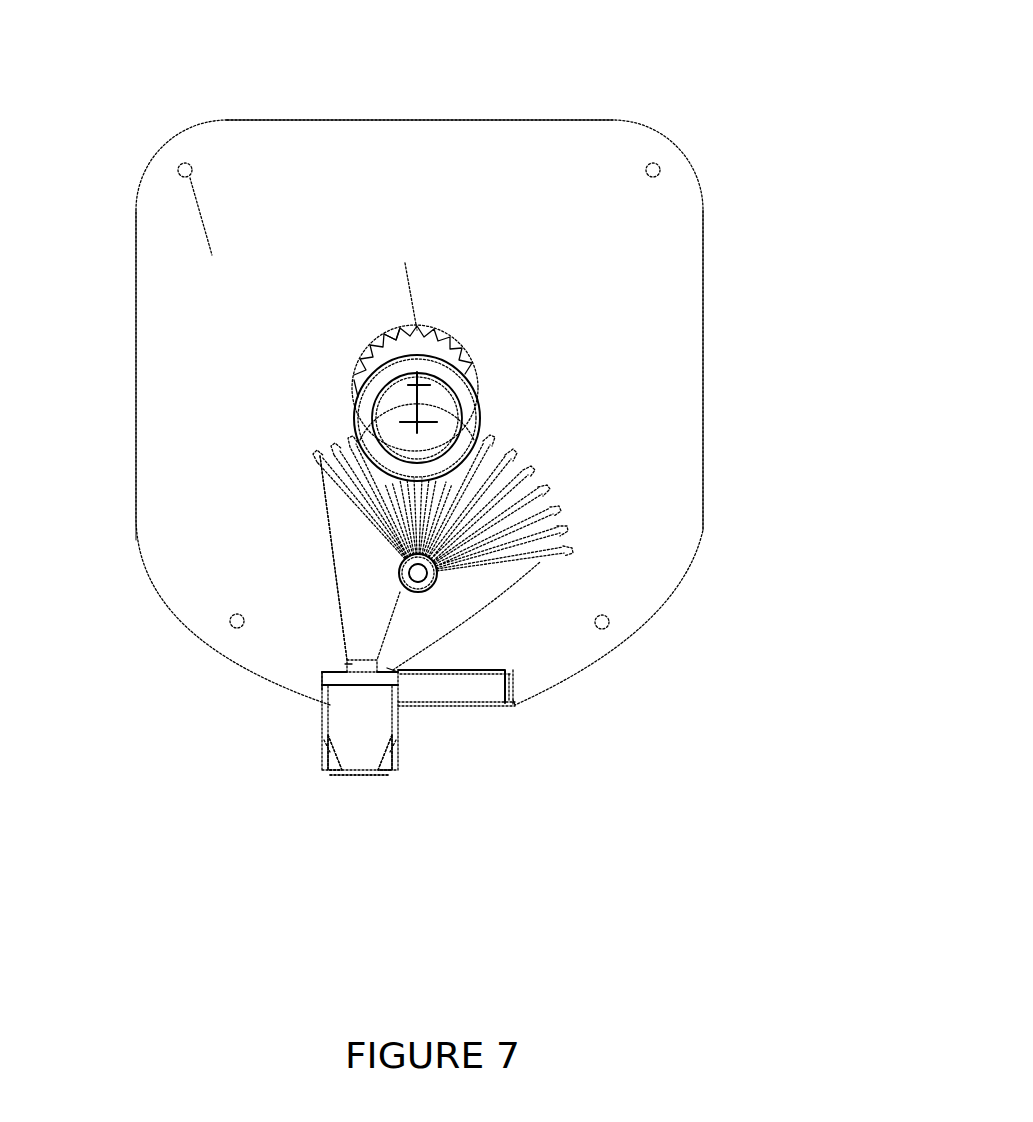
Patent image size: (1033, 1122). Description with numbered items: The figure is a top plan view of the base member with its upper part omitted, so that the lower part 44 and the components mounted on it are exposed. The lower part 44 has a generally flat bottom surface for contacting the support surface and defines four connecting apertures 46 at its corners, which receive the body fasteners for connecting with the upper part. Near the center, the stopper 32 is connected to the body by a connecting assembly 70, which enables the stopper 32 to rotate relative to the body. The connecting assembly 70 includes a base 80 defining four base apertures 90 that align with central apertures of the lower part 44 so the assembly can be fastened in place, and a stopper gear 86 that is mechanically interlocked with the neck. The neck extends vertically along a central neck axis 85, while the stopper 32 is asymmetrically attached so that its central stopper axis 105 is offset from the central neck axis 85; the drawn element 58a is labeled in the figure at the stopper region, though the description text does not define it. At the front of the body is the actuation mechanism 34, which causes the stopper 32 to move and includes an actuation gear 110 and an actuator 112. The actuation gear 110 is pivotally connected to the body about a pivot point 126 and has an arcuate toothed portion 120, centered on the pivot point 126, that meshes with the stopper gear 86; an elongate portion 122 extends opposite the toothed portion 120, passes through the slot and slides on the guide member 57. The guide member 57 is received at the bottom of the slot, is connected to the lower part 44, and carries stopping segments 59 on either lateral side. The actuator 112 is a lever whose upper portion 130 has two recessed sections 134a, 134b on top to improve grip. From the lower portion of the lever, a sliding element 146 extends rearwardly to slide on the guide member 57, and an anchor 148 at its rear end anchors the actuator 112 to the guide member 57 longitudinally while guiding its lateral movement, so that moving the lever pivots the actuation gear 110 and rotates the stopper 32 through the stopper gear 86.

The stopper 32 is at (358, 397).
The lower part 44 is at (490, 150).
The connecting apertures 46 is at (196, 148).
The hub 58a is at (433, 420).
The connecting assembly 70 is at (497, 364).
The base 80 is at (448, 335).
The central neck axis 85 is at (408, 385).
The stopper gear 86 is at (400, 340).
The base apertures 90 is at (432, 322).
The central stopper axis 105 is at (412, 418).
The actuation gear 110 is at (342, 572).
The arcuate toothed portion 120 is at (580, 516).
The pivot point 126 is at (432, 583).
The upper portion 130 is at (378, 723).
The sliding element 146 is at (357, 675).
The anchor 148 is at (347, 657).
The guide member 57 is at (475, 685).
The stopping segments 59 is at (513, 702).
The actuation mechanism 34 is at (304, 660).
The actuator 112 is at (367, 789).
The elongate portion 122 is at (387, 668).
The recessed section 134a is at (403, 777).
The recessed section 134b is at (338, 787).